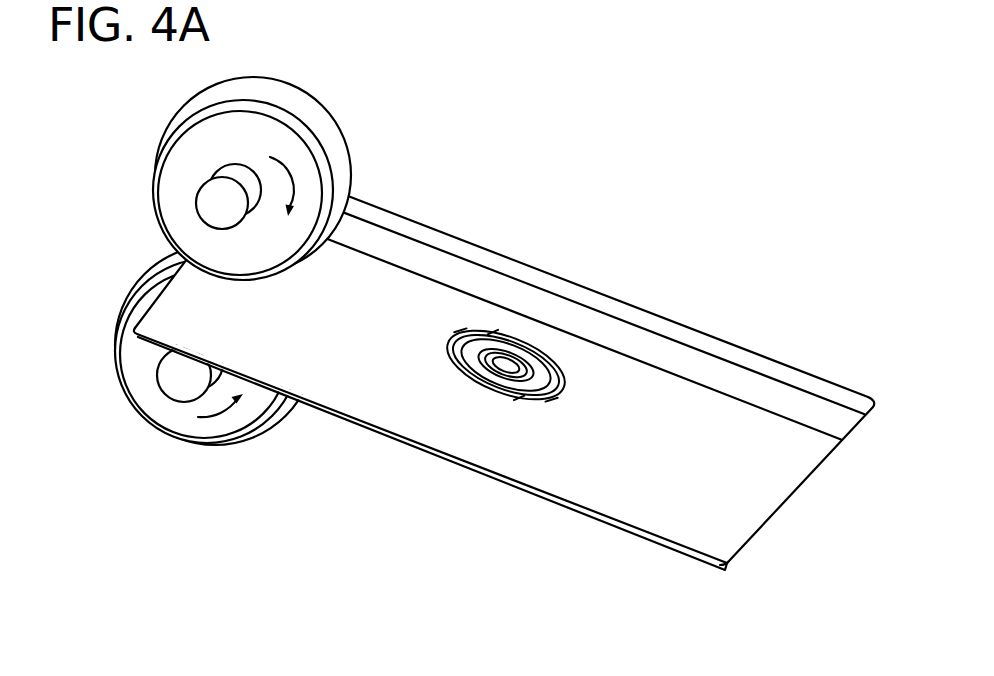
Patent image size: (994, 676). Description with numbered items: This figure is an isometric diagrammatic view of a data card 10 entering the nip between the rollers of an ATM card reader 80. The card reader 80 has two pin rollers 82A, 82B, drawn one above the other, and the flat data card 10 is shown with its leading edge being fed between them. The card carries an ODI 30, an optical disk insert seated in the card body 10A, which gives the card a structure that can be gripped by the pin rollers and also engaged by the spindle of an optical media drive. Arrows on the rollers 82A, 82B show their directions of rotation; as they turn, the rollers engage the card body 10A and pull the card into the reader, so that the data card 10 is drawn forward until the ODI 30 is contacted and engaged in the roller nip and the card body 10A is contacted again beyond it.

The ATM card reader 80 is at (273, 140).
The pin roller 82A is at (169, 166).
The pin roller 82B is at (137, 385).
The data card 10 is at (600, 530).
The card body 10A is at (136, 346).
The ODI 30 is at (532, 354).